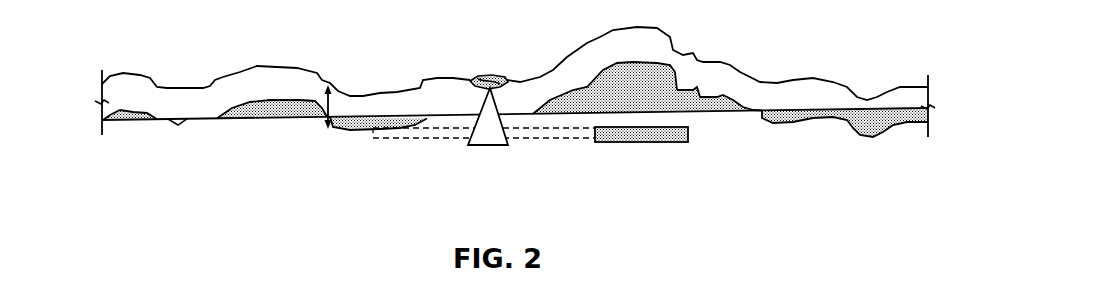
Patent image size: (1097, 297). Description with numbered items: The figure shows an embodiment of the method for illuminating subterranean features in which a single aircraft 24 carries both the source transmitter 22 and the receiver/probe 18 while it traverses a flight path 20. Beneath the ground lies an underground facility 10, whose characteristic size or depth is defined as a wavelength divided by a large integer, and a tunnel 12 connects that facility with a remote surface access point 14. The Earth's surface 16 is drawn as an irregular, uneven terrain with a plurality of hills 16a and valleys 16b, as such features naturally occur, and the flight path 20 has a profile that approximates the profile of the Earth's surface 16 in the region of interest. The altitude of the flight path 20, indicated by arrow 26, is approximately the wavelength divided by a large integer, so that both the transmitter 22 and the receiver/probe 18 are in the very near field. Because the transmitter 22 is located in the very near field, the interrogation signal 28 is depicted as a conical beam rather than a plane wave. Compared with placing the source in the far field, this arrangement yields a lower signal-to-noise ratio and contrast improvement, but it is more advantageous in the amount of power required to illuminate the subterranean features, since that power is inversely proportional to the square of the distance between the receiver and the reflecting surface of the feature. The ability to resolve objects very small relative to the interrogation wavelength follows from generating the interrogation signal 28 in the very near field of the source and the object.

The underground facility 10 is at (645, 152).
The tunnel 12 is at (445, 135).
The remote surface access point 14 is at (357, 132).
The Earth's surface 16 is at (260, 100).
The hills 16a is at (680, 73).
The valleys 16b is at (873, 137).
The receiver/probe 18 is at (503, 62).
The flight path 20 is at (190, 87).
The transmitter 22 is at (474, 60).
The aircraft 24 is at (477, 78).
The arrow 26 is at (338, 92).
The interrogation signal 28 is at (490, 147).